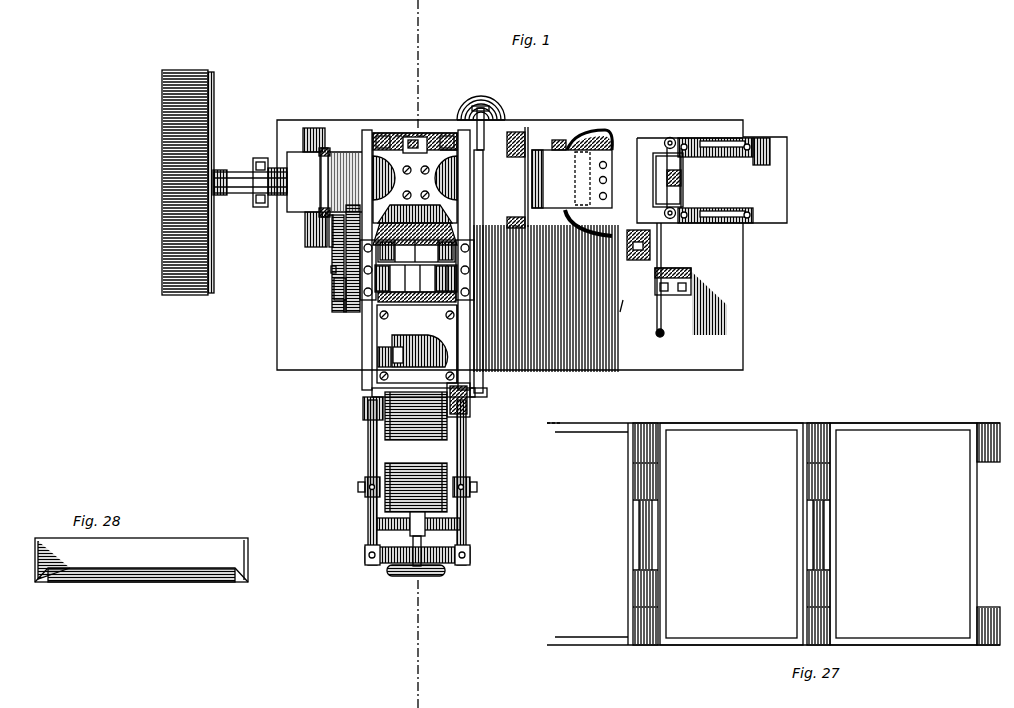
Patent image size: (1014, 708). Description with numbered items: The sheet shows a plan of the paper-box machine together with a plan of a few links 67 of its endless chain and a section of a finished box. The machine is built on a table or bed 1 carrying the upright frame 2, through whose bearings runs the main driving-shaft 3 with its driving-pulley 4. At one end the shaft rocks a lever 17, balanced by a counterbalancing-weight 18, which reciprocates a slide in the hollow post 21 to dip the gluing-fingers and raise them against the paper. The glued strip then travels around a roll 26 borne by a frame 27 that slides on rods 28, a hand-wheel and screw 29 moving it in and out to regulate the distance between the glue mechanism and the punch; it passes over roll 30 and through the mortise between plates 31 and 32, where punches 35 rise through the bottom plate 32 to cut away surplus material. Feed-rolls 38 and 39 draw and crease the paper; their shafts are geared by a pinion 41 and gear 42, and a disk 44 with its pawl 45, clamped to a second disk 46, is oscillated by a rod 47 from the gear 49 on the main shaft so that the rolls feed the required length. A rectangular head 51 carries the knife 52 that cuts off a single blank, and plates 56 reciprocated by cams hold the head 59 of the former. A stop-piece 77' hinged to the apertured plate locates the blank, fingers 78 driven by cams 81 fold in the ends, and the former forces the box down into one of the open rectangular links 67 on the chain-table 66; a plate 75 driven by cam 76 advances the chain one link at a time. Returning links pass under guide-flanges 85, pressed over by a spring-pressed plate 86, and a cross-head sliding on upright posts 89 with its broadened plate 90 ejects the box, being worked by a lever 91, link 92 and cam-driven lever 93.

In FIG. 1, the table or bed 1 is at (618, 312).
In FIG. 1, the upright frame 2 is at (357, 134).
In FIG. 1, the main driving-shaft 3 is at (245, 172).
In FIG. 1, the driving-pulley 4 is at (162, 184).
In FIG. 1, the lever 17 is at (487, 372).
In FIG. 1, the counterbalancing-weight 18 is at (485, 102).
In FIG. 1, the hollow post 21 is at (470, 405).
In FIG. 1, the roll 26 is at (470, 505).
In FIG. 1, the frame 27 is at (365, 515).
In FIG. 1, the rods 28 is at (368, 453).
In FIG. 1, the hand-wheel and screw 29 is at (417, 554).
In FIG. 1, the roll 30 is at (449, 438).
In FIG. 1, the plate 31 is at (405, 347).
In FIG. 1, the bottom plate 32 is at (380, 365).
In FIG. 1, the punches 35 is at (380, 380).
In FIG. 1, the feed-roll 38 is at (440, 306).
In FIG. 1, the feed-roll 39 is at (386, 320).
In FIG. 1, the pinion 41 is at (336, 282).
In FIG. 1, the gear 42 is at (356, 311).
In FIG. 1, the disk 44 is at (349, 313).
In FIG. 1, the pawl 45 is at (333, 270).
In FIG. 1, the disk 46 is at (337, 313).
In FIG. 1, the rod 47 is at (332, 247).
In FIG. 1, the gear 49 is at (337, 150).
In FIG. 1, the rectangular head 51 is at (382, 238).
In FIG. 1, the cutter-blade or knife 52 is at (415, 189).
In FIG. 1, the plates 56 is at (384, 134).
In FIG. 1, the head 59 is at (444, 158).
In FIG. 1, the chain-table or runway 66 is at (656, 180).
In FIG. 1, the links 67 is at (560, 148).
In FIG. 27, the links 67 is at (818, 534).
In FIG. 1, the plate 75 is at (572, 179).
In FIG. 1, the cam 76 is at (598, 140).
In FIG. 1, the stop-piece 77' is at (429, 91).
In FIG. 1, the fingers 78 is at (320, 182).
In FIG. 1, the cams 81 is at (527, 132).
In FIG. 1, the guide-flanges 85 is at (700, 140).
In FIG. 1, the spring-pressed plate 86 is at (762, 140).
In FIG. 1, the upright posts 89 is at (670, 138).
In FIG. 1, the broadened plate 90 is at (682, 186).
In FIG. 1, the lever 91 is at (672, 296).
In FIG. 1, the link 92 is at (665, 335).
In FIG. 1, the lever 93 is at (647, 262).